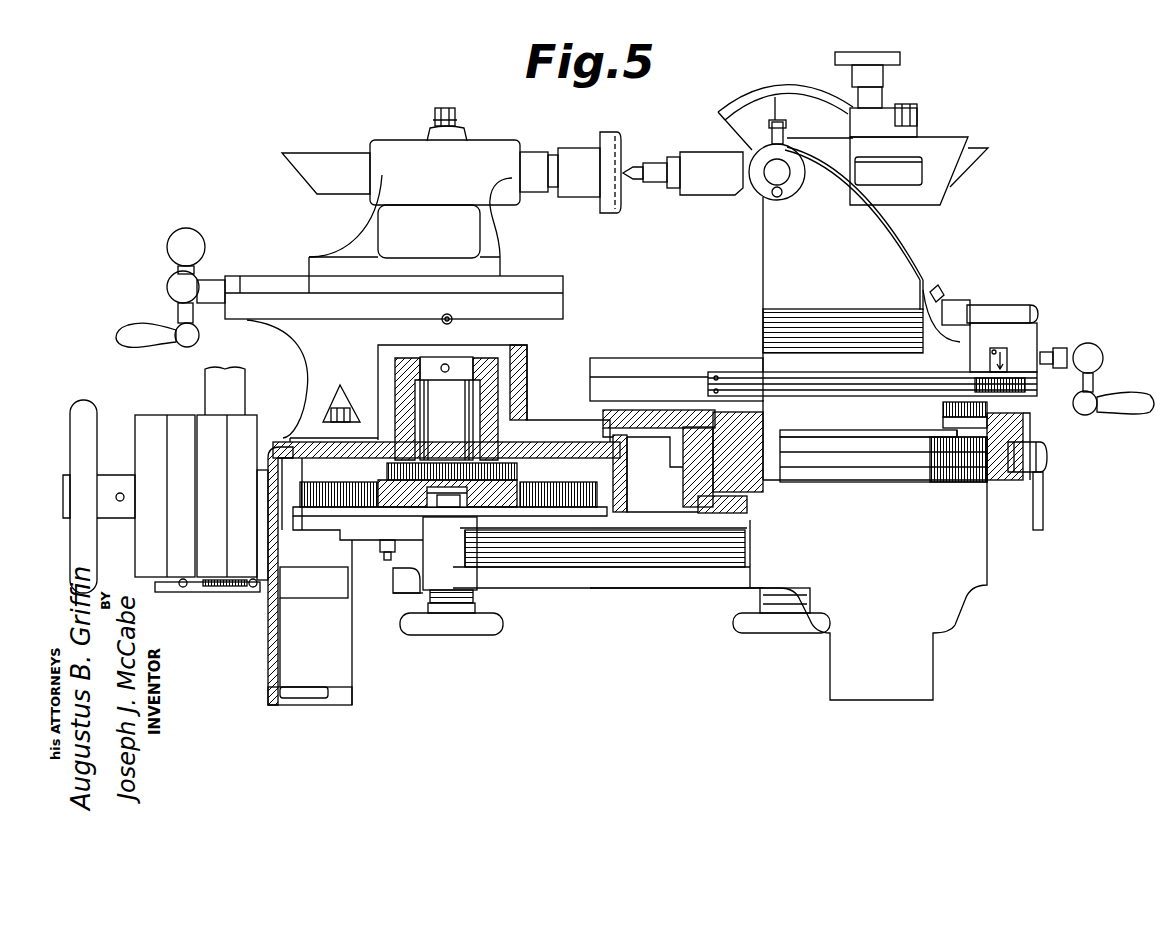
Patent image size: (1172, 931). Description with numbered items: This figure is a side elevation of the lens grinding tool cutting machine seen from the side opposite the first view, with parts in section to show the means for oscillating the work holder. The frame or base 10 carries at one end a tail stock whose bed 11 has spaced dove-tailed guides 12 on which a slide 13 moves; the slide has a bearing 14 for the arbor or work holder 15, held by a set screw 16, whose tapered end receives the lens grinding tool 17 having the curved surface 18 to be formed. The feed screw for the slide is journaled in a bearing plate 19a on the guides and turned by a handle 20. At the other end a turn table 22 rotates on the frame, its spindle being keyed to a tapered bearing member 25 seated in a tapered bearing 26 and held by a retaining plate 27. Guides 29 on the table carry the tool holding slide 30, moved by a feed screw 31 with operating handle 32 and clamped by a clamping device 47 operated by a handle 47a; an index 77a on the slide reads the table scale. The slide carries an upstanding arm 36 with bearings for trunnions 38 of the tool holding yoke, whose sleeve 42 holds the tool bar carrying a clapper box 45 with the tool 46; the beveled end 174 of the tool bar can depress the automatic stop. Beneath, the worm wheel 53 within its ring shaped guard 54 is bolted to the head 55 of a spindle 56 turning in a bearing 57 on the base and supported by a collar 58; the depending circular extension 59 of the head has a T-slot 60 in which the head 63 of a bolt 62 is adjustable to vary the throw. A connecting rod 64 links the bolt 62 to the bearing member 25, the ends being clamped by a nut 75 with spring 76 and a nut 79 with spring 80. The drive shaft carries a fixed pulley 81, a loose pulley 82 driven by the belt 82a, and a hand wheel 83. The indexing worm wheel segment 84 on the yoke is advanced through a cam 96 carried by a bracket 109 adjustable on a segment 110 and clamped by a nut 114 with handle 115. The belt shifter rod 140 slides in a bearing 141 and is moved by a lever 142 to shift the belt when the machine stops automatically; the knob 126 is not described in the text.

The frame or base 10 is at (257, 647).
The bed or table 11 is at (305, 352).
The dove-tailed guides 12 is at (280, 276).
The slide 13 is at (343, 247).
The bearing 14 is at (393, 143).
The arbor or work holder 15 is at (342, 158).
The set screw 16 is at (446, 110).
The work or lens grinding tool 17 is at (600, 140).
The curved surface 18 is at (626, 152).
The bearing plate 19a is at (233, 276).
The handle 20 is at (135, 322).
The table or support 22 is at (650, 408).
The tapered bearing member 25 is at (700, 473).
The tapered bearing 26 is at (668, 450).
The retaining plate 27 is at (733, 506).
The guides 29 is at (686, 351).
The tool holding slide 30 is at (988, 331).
The feed screw 31 is at (1071, 348).
The operating handle 32 is at (1137, 392).
The upstanding arm 36 is at (890, 243).
The trunnions 38 is at (790, 174).
The sleeve or bearing 42 is at (932, 142).
The clapper box 45 is at (707, 153).
The tool 46 is at (660, 163).
The clamping device 47 is at (954, 305).
The handle 47a is at (1033, 308).
The worm wheel 53 is at (358, 510).
The ring shaped guard 54 is at (578, 538).
The head 55 is at (526, 430).
The spindle 56 is at (446, 408).
The bearing 57 is at (393, 388).
The collar 58 is at (416, 356).
The circular extension 59 is at (468, 510).
The T-slot 60 is at (450, 488).
The bolt 62 is at (447, 500).
The head 63 is at (468, 506).
The connecting rod 64 is at (645, 532).
The nut 75 is at (777, 628).
The spring 76 is at (760, 594).
The index 77a is at (990, 359).
The nut 79 is at (493, 624).
The spring 80 is at (476, 598).
The fixed pulley 81 is at (224, 418).
The loose pulley 82 is at (152, 420).
The belt 82a is at (208, 381).
The hand wheel 83 is at (82, 406).
The worm wheel segment 84 is at (800, 99).
The cam 96 is at (943, 409).
The block or bracket 109 is at (1023, 433).
The segment 110 is at (868, 473).
The nut 114 is at (1047, 458).
The handle 115 is at (1043, 492).
The knob 126 is at (882, 77).
The rod 140 is at (392, 560).
The bearing 141 is at (323, 590).
The lever 142 is at (400, 562).
The beveled end 174 is at (968, 178).